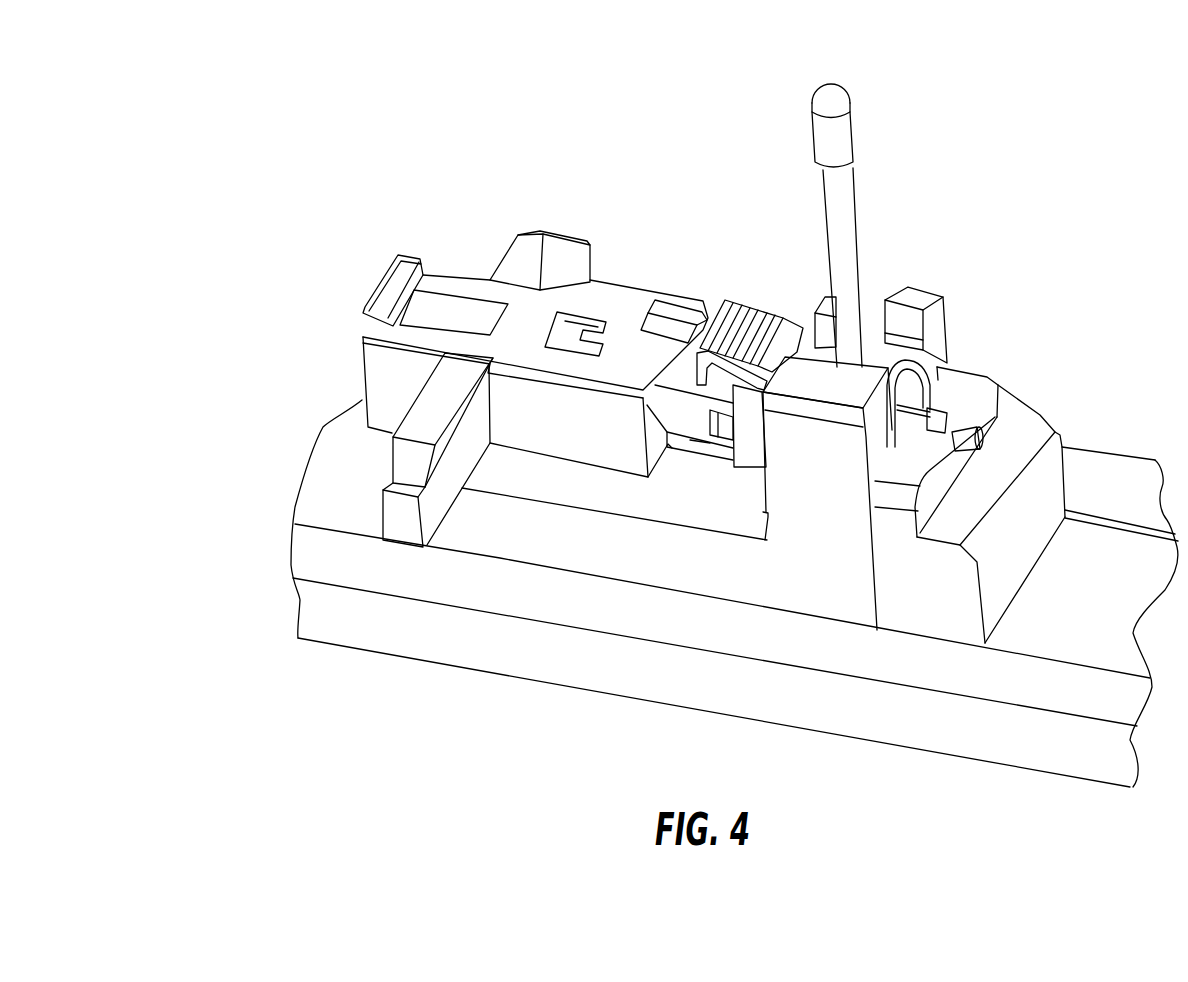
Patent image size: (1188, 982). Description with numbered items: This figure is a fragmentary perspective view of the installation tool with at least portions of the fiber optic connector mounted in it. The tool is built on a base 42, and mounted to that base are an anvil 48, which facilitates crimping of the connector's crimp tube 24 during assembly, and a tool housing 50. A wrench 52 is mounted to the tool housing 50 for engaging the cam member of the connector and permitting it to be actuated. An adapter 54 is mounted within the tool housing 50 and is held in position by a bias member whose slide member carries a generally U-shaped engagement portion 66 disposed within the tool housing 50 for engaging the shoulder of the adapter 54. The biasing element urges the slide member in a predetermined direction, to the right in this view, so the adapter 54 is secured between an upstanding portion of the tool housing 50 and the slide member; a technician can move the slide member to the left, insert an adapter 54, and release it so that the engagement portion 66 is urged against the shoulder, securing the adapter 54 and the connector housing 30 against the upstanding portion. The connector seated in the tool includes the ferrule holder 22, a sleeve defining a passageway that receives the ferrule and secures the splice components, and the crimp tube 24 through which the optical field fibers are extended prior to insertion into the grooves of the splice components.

The ferrule holder 22 is at (915, 418).
The crimp tube 24 is at (963, 416).
The housing 30 is at (782, 300).
The base 42 is at (413, 620).
The anvil 48 is at (1002, 421).
The tool housing 50 is at (813, 577).
The wrench 52 is at (843, 197).
The adapter 54 is at (603, 285).
The engagement portion 66 is at (533, 250).